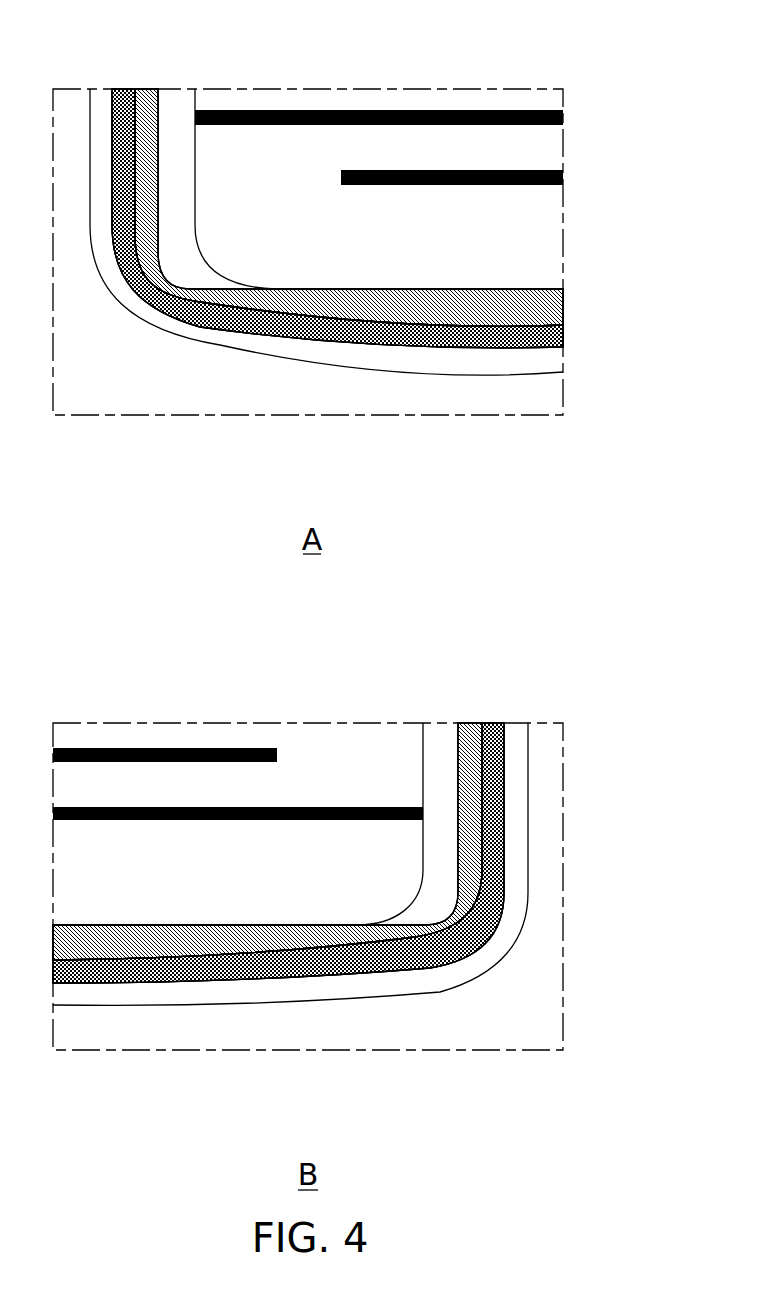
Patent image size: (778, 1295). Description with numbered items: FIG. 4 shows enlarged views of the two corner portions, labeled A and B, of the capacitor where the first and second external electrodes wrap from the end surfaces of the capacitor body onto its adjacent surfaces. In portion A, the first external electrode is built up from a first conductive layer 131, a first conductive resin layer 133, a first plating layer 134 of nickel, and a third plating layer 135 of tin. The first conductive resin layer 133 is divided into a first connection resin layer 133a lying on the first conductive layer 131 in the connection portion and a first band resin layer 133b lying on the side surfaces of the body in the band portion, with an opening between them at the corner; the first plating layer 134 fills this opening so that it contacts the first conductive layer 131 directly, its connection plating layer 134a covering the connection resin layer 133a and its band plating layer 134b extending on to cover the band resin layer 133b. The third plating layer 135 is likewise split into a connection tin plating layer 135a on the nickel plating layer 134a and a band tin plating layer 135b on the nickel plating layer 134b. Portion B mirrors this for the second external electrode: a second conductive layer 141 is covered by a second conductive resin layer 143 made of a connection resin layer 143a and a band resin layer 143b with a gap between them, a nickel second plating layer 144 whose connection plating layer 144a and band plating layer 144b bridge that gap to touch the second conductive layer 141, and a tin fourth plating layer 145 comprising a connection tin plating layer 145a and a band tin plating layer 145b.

The first conductive layer 131 is at (180, 123).
The first conductive resin layer 133 is at (275, 460).
The 1-1 conductive resin layer 133a is at (150, 170).
The 1-2 conductive resin layer 133b is at (370, 307).
The first plating layer 134 is at (130, 460).
The 1-1 plating layer 134a is at (125, 196).
The 1-2 plating layer 134b is at (298, 335).
The third plating layer 135 is at (333, 40).
The 3-1 plating layer 135a is at (100, 160).
The 3-2 plating layer 135b is at (452, 363).
The second conductive layer 141 is at (443, 757).
The second conductive resin layer 143 is at (230, 1097).
The 2-1 conductive resin layer 143a is at (467, 807).
The 2-2 conductive resin layer 143b is at (247, 940).
The second plating layer 144 is at (373, 1097).
The 2-1 plating layer 144a is at (492, 832).
The 2-2 plating layer 144b is at (323, 970).
The fourth plating layer 145 is at (172, 677).
The 4-1 plating layer 145a is at (517, 793).
The 4-2 plating layer 145b is at (167, 1000).